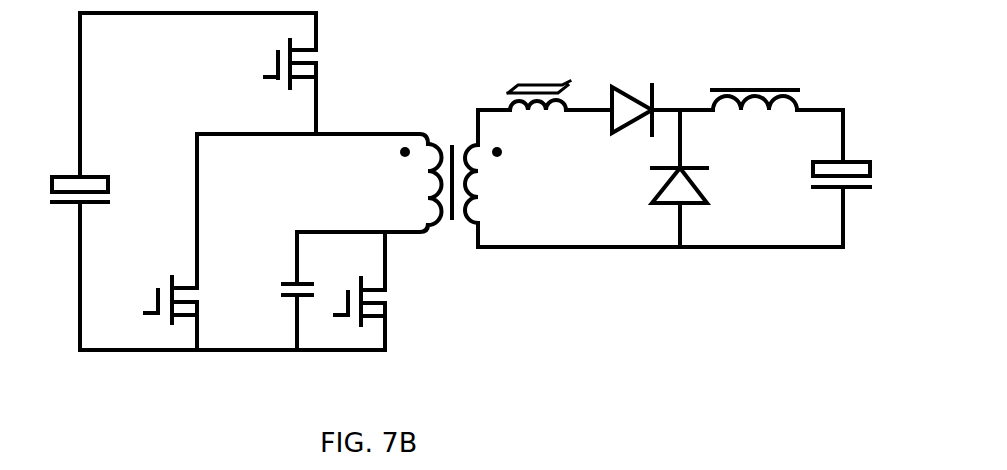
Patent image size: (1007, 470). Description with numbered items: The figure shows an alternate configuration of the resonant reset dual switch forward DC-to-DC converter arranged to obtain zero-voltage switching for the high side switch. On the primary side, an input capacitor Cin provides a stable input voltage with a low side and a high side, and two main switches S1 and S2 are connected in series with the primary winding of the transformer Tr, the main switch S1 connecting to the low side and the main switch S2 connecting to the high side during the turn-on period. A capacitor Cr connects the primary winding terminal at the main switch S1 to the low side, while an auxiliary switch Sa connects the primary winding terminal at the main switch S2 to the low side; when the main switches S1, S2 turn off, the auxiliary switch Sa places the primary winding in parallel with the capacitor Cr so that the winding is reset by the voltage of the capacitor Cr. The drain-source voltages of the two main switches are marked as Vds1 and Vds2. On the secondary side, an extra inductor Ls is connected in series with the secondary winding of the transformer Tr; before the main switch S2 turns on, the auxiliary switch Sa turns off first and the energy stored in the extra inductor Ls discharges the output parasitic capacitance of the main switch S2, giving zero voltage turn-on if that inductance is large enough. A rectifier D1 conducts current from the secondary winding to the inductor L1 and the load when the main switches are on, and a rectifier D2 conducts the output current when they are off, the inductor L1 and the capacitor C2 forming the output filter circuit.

The main switch S2 is at (268, 64).
The drain-source voltage of S2 Vds2 is at (356, 57).
The auxiliary switch Sa is at (161, 286).
The capacitor Cr is at (275, 272).
The main switch S1 is at (356, 287).
The drain-source voltage of S1 Vds1 is at (422, 300).
The transformer Tr is at (451, 153).
The extra inductor Ls is at (539, 79).
The rectifier D1 is at (633, 92).
The rectifier D2 is at (650, 185).
The inductor L1 is at (755, 79).
The capacitor C2 is at (862, 193).
The input capacitor Cin is at (80, 189).